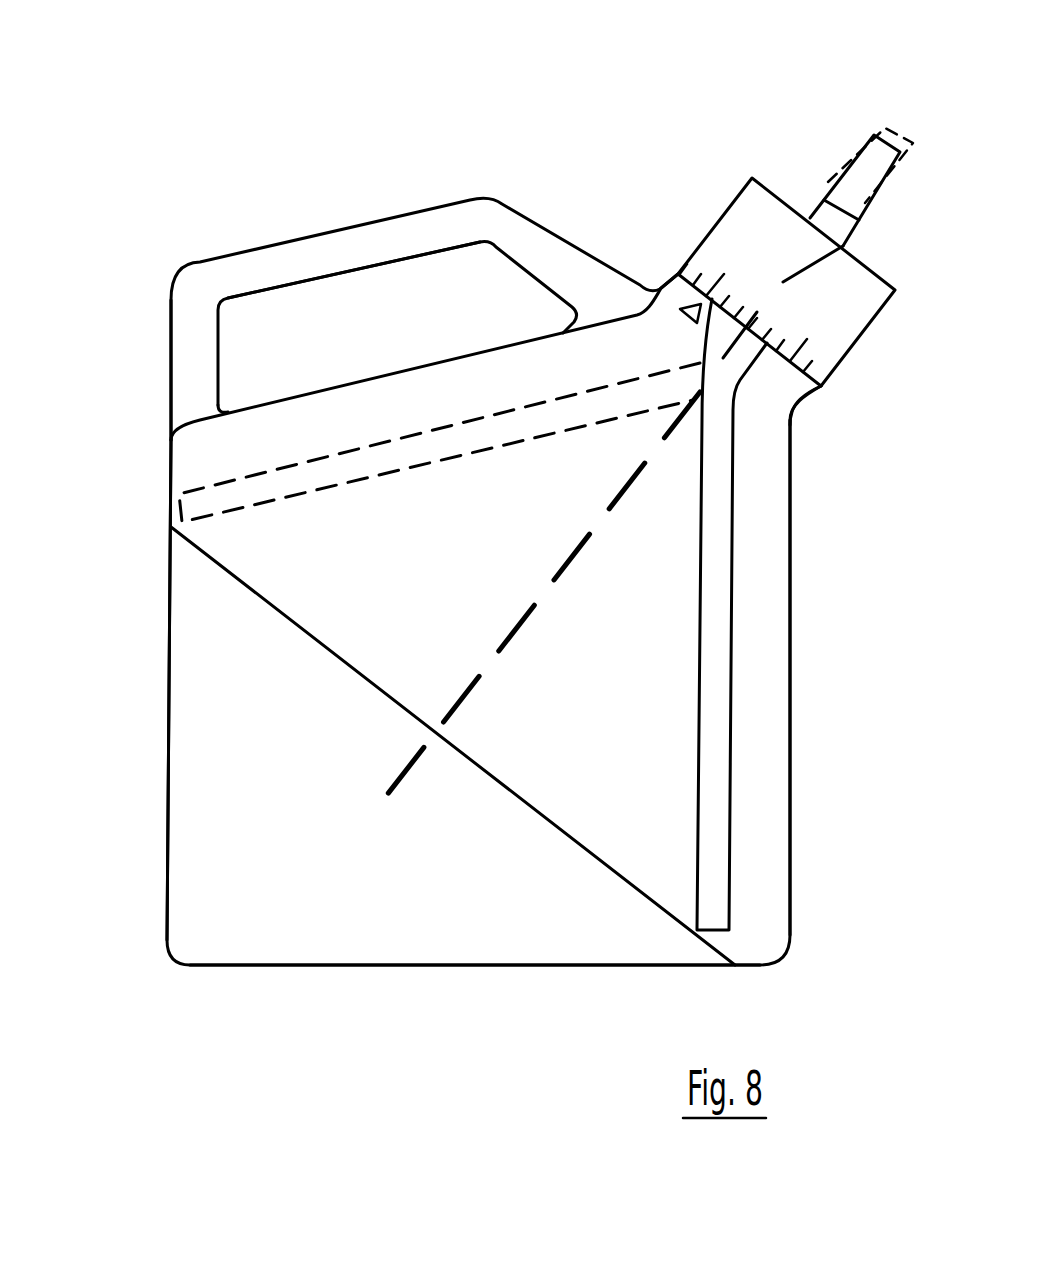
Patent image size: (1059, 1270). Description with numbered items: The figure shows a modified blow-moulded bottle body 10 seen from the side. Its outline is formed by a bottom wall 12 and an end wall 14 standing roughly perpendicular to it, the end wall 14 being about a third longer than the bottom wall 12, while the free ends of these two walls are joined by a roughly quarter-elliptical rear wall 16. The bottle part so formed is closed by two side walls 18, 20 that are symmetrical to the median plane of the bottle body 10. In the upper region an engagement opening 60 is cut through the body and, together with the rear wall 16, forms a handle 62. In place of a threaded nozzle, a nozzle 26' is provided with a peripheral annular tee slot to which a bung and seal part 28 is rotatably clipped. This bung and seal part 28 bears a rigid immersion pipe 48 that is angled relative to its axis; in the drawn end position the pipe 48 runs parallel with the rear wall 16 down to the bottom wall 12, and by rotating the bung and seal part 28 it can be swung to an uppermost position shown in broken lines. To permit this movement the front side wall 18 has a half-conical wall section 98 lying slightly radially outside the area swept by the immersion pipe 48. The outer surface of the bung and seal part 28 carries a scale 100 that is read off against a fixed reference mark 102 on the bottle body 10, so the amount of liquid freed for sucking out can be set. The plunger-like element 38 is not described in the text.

The bottle body 10 is at (332, 892).
The bottom wall 12 is at (443, 967).
The end wall 14 is at (792, 758).
The rear wall 16 is at (170, 767).
The front side wall 18 is at (463, 869).
The side wall 20 is at (622, 812).
The nozzle 26' is at (784, 378).
The bung and seal part 28 is at (760, 233).
The plunger 38 is at (887, 125).
The immersion pipe 48 is at (712, 648).
The engagement opening 60 is at (480, 245).
The handle 62 is at (347, 257).
The half-conical wall section 98 is at (438, 598).
The scale 100 is at (812, 359).
The fixed reference mark 102 is at (682, 309).